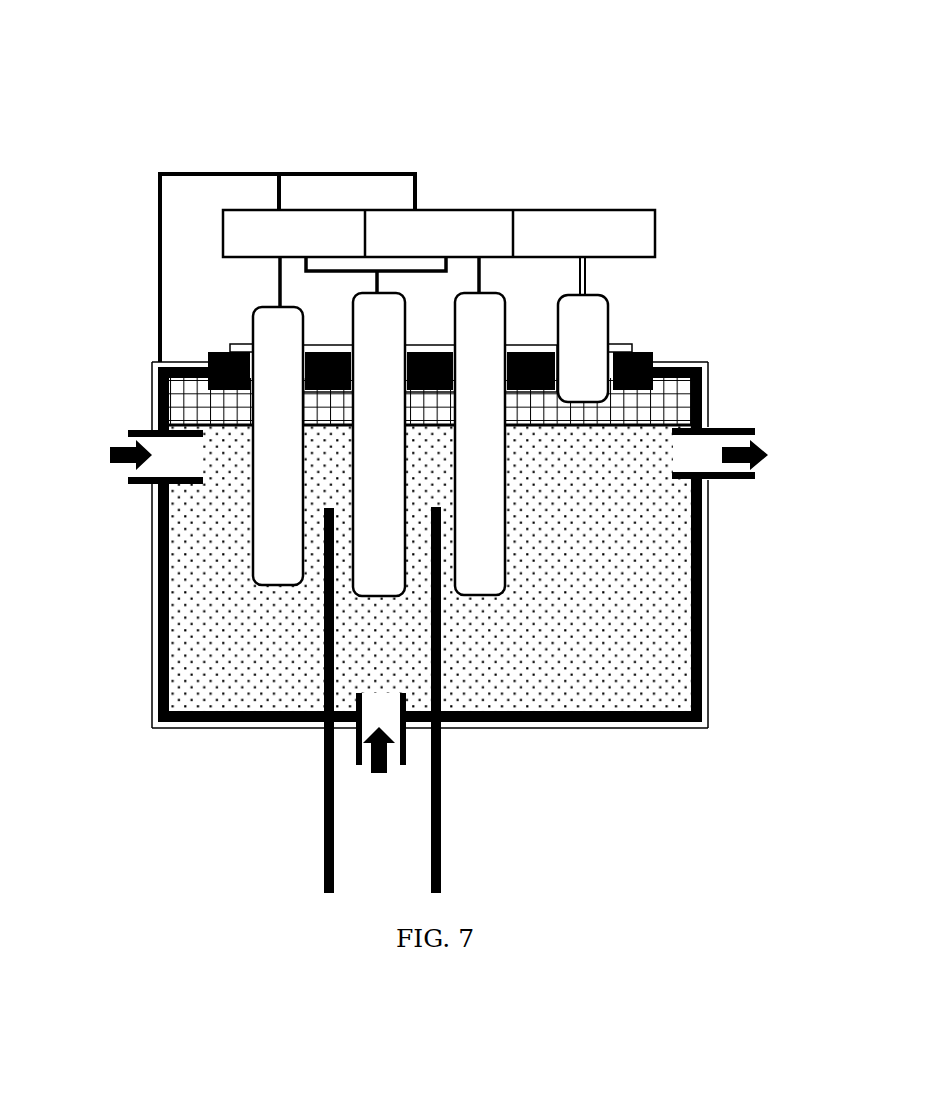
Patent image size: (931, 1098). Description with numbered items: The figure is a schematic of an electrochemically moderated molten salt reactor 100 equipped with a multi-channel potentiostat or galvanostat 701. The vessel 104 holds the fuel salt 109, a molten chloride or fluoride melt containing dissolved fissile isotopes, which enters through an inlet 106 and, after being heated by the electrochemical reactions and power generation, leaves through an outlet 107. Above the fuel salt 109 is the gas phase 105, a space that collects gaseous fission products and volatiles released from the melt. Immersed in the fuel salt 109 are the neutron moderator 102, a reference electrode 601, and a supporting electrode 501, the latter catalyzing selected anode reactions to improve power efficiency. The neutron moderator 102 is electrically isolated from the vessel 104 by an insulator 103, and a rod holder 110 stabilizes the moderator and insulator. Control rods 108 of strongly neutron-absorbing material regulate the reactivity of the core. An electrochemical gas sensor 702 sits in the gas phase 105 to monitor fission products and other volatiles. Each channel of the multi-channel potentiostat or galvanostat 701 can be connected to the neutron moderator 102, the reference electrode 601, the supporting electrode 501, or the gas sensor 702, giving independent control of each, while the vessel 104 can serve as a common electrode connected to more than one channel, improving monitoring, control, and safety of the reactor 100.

The electrochemically moderated molten salt reactor 100 is at (432, 31).
The neutron moderator 102 is at (278, 446).
The insulator 103 is at (628, 345).
The vessel 104 is at (712, 398).
The gas phase 105 is at (430, 401).
The inlet 106 is at (233, 618).
The outlet 107 is at (741, 453).
The control rods 108 is at (321, 843).
The fuel salt 109 is at (430, 568).
The rod holder 110 is at (655, 350).
The supporting electrode 501 is at (480, 444).
The reference electrode 601 is at (379, 444).
The multi-channel potentiostat or galvanostat 701 is at (507, 200).
The electrochemical gas sensor 702 is at (621, 328).